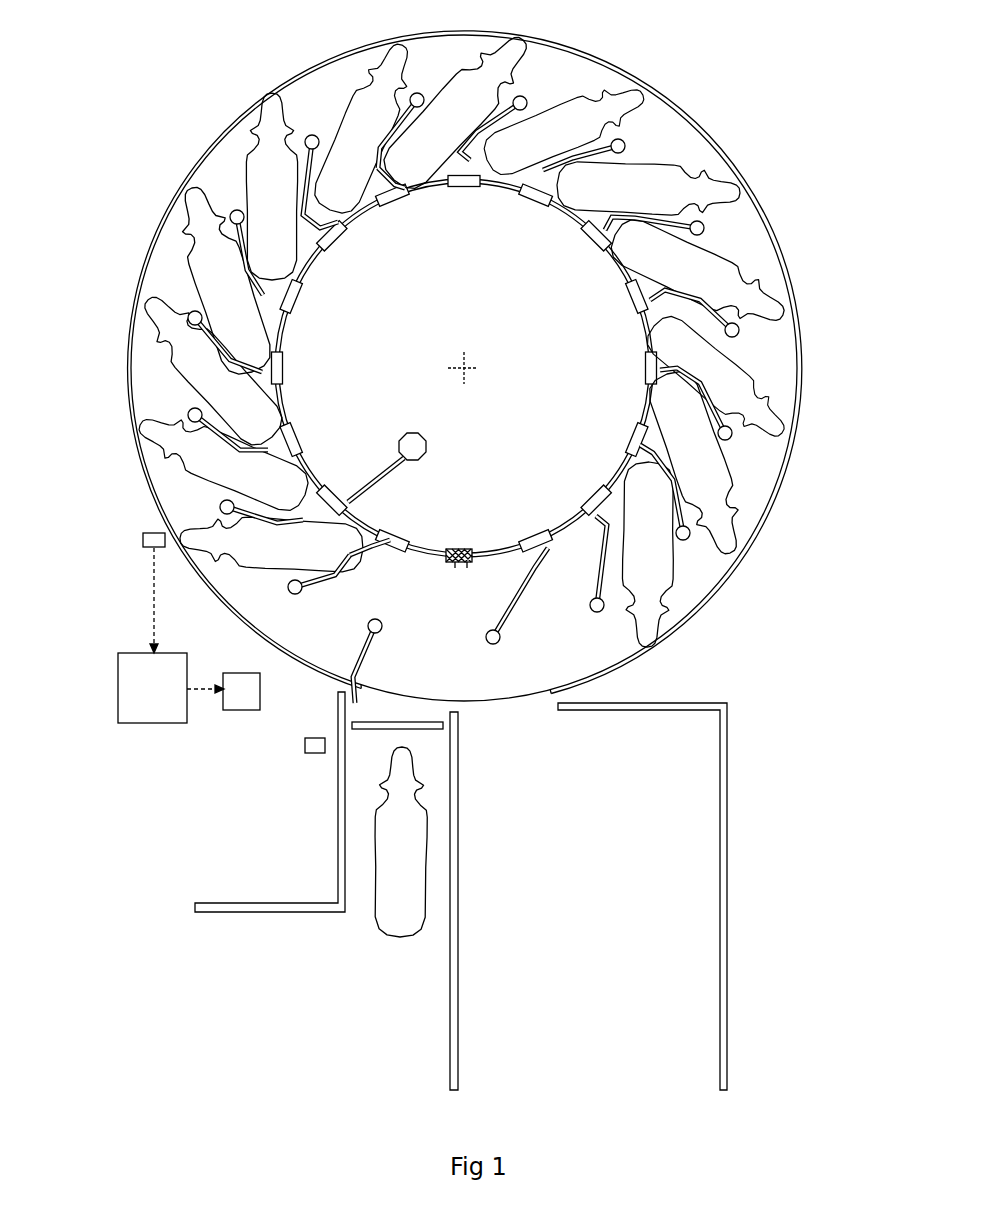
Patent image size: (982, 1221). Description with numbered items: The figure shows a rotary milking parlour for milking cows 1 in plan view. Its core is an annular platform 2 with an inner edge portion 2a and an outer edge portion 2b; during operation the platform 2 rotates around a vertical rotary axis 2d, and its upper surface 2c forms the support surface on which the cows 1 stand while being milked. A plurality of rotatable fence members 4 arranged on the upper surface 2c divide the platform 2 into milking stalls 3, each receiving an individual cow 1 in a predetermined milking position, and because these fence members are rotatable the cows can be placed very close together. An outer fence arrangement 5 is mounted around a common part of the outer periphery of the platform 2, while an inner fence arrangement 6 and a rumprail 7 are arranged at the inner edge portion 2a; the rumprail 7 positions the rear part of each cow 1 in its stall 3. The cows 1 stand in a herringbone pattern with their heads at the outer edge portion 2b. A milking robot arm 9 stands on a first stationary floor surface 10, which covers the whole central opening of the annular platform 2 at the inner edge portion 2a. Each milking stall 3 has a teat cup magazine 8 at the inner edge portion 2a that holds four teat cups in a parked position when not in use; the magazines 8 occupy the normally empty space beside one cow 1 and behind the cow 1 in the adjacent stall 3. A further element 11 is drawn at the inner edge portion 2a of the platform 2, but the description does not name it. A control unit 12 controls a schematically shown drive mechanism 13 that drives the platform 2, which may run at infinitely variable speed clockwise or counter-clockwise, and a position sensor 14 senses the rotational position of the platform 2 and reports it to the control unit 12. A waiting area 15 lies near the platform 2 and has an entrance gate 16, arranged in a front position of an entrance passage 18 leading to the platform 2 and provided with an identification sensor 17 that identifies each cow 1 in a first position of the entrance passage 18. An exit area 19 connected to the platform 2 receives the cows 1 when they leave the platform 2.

The cow 1 is at (390, 858).
The annular platform 2 is at (678, 135).
The inner edge portion 2a is at (560, 200).
The outer edge portion 2b is at (775, 230).
The upper surface 2c is at (655, 130).
The vertical rotary axis 2d is at (460, 365).
The milking stall 3 is at (760, 433).
The rotatable fence member 4 is at (333, 580).
The outer fence arrangement 5 is at (797, 295).
The inner fence arrangement 6 is at (422, 553).
The rumprail 7 is at (377, 557).
The teat cup magazine 8 is at (387, 196).
The milking robot arm 9 is at (405, 447).
The first stationary floor surface 10 is at (524, 431).
The drive unit 11 is at (467, 565).
The control unit 12 is at (136, 700).
The drive mechanism 13 is at (240, 703).
The position sensor 14 is at (143, 545).
The waiting area 15 is at (365, 1012).
The entrance gate 16 is at (408, 722).
The identification sensor 17 is at (305, 746).
The entrance passage 18 is at (368, 798).
The exit area 19 is at (604, 839).